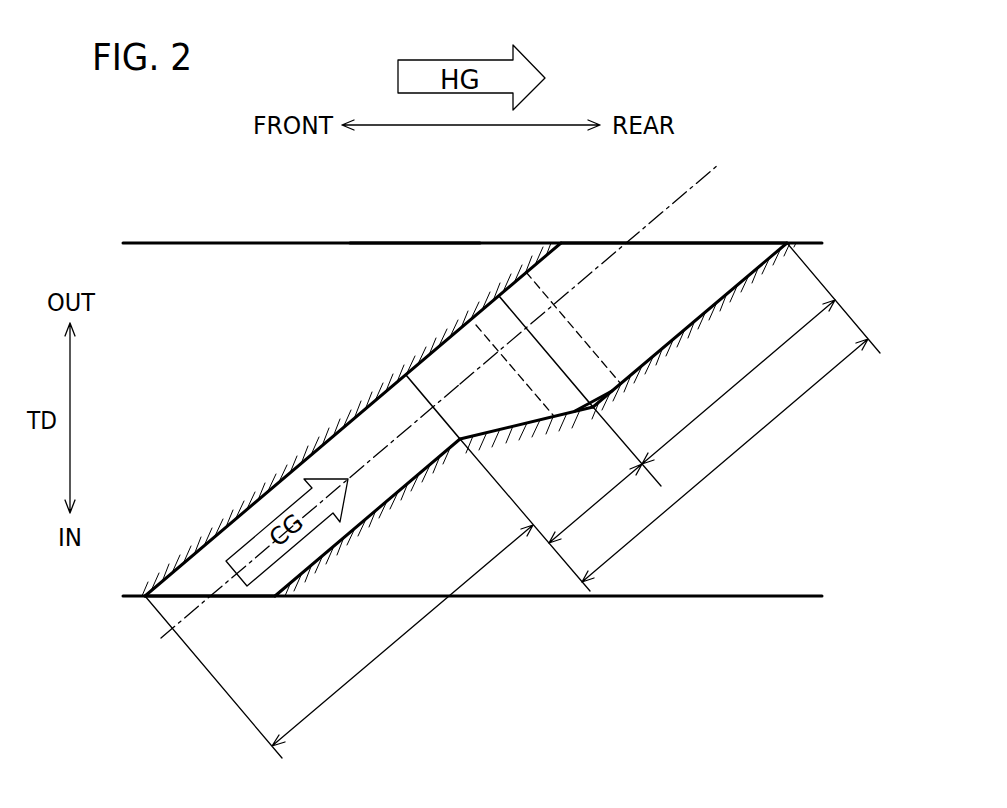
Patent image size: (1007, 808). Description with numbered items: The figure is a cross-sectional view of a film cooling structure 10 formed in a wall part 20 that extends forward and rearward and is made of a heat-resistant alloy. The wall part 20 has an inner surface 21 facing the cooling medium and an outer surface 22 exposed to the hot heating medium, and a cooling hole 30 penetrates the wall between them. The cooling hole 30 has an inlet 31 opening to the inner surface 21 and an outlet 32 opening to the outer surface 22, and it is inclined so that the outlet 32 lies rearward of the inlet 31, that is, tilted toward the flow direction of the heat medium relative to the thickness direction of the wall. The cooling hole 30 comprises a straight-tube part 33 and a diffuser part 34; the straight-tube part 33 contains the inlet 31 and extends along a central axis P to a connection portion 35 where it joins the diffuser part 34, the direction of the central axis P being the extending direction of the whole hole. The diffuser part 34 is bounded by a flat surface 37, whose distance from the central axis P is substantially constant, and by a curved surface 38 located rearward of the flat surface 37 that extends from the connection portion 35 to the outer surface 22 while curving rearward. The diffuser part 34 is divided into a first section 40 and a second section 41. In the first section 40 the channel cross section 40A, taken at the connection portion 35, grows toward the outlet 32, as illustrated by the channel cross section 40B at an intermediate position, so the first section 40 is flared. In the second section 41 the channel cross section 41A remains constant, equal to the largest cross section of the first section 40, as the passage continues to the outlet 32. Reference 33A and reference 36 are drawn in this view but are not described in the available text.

The film cooling structure 10 is at (133, 193).
The wall part 20 is at (236, 228).
The inner surface 21 is at (610, 597).
The outer surface 22 is at (420, 243).
The cooling hole 30 is at (321, 377).
The inlet 31 is at (262, 598).
The outlet 32 is at (600, 243).
The straight-tube part 33 is at (367, 598).
The axis of narrow portion 33A is at (365, 475).
The diffuser part 34 is at (731, 412).
The connection portion 35 is at (403, 370).
The first wall surface 36 is at (270, 498).
The flat surface 37 is at (465, 330).
The curved surface 38 is at (593, 357).
The first section 40 is at (605, 475).
The channel cross section 40A is at (455, 418).
The channel cross section 40B is at (600, 409).
The second section 41 is at (738, 382).
The channel cross section 41A is at (645, 366).
The central axis P is at (202, 603).